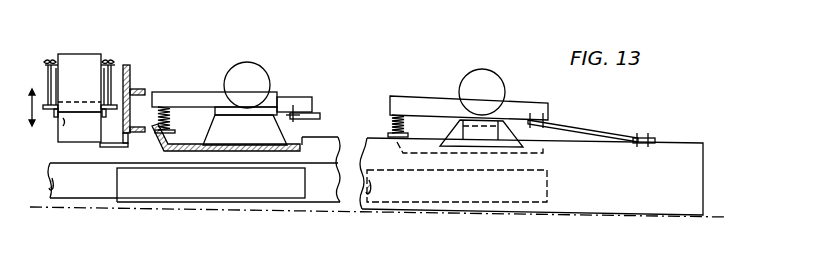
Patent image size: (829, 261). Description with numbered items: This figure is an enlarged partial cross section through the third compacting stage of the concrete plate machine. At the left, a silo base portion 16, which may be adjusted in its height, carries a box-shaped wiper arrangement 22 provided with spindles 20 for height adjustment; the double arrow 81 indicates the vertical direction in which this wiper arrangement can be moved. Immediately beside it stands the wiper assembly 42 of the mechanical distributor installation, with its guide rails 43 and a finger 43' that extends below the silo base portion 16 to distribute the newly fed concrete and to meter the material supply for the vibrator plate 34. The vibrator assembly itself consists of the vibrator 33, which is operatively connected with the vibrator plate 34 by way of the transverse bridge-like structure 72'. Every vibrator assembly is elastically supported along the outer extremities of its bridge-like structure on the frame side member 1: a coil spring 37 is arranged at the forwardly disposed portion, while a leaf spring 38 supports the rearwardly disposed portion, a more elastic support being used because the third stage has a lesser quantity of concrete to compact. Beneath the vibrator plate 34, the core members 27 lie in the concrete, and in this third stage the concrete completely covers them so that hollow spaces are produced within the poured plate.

The side wall or bearer member 1 is at (283, 205).
The silo base portion 16 is at (77, 61).
The spindle 20 is at (56, 82).
The box-shaped wiper arrangement 22 is at (64, 122).
The core member 27 is at (92, 188).
The vibrator 33 is at (254, 73).
The vibrator plate 34 is at (237, 152).
The coil spring 37 is at (392, 125).
The leaf spring 38 is at (590, 128).
The wiper assembly 42 is at (128, 66).
The guide rail 43 is at (154, 72).
The finger 43' is at (117, 164).
The transverse bridge-like structure 72' is at (237, 94).
The arrow 81 is at (23, 107).